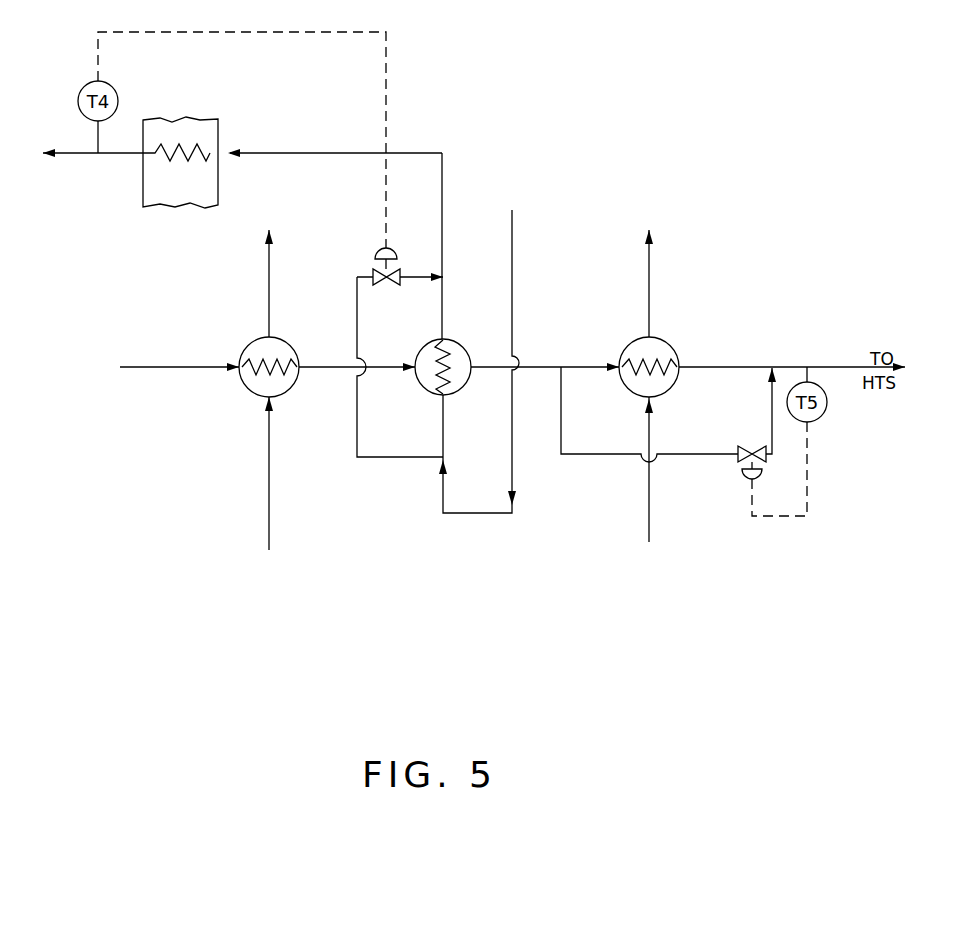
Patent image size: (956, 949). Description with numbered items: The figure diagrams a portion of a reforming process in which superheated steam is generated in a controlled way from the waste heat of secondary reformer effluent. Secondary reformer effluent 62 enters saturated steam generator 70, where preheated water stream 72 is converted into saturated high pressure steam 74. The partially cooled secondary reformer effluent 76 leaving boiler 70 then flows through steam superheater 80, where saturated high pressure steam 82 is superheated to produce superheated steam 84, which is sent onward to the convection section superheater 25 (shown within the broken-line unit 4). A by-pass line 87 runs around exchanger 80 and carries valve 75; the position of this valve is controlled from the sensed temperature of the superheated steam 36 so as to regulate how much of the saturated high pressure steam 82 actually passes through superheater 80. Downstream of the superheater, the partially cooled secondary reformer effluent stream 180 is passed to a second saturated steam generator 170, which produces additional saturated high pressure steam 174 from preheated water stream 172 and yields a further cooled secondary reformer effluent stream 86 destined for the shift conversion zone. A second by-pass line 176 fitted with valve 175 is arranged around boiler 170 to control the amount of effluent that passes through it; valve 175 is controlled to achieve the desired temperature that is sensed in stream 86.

The heat exchanger unit 4 is at (218, 125).
The convection section superheater 25 is at (192, 160).
The superheated steam 36 is at (78, 158).
The secondary reformer effluent 62 is at (179, 366).
The saturated steam generator 70 is at (252, 341).
The preheated water stream 72 is at (270, 470).
The saturated high pressure steam 74 is at (270, 290).
The valve 75 is at (380, 251).
The partially cooled secondary reformer effluent 76 is at (333, 366).
The steam superheater 80 is at (458, 341).
The saturated high pressure steam 82 is at (512, 262).
The superheated steam 84 is at (442, 193).
The further cooled secondary reformer effluent stream 86 is at (825, 365).
The by-pass line 87 is at (396, 459).
The second saturated steam generator 170 is at (669, 337).
The preheated water stream 172 is at (651, 425).
The additional saturated high pressure steam 174 is at (651, 262).
The valve 175 is at (745, 473).
The by-pass line 176 is at (612, 458).
The partially cooled secondary reformer effluent stream 180 is at (530, 366).